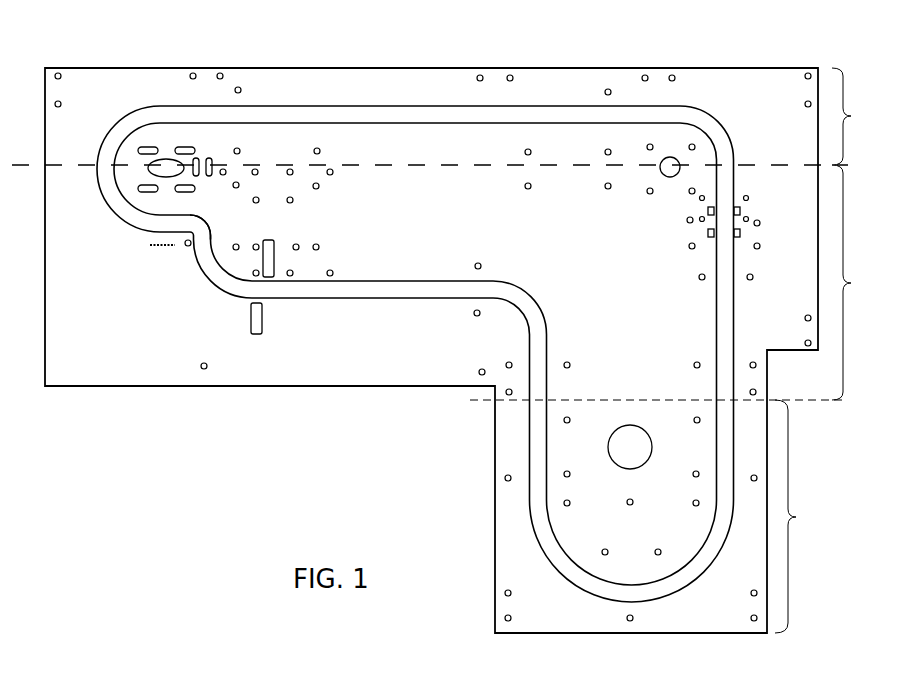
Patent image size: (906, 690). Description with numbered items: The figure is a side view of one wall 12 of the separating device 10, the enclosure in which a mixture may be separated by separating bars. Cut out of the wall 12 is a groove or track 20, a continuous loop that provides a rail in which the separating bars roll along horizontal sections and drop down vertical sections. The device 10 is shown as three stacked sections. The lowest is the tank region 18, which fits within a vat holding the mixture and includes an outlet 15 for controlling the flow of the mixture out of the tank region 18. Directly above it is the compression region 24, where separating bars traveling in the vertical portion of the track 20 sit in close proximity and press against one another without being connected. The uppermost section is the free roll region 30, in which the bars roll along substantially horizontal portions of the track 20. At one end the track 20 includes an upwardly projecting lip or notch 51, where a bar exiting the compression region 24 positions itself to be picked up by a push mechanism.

The separating device 10 is at (288, 68).
The wall 12 is at (347, 362).
The track 20 is at (410, 117).
The notch 51 is at (202, 208).
The outlet 15 is at (648, 460).
The free roll region 30 is at (854, 116).
The compression region 24 is at (854, 282).
The tank region 18 is at (797, 516).